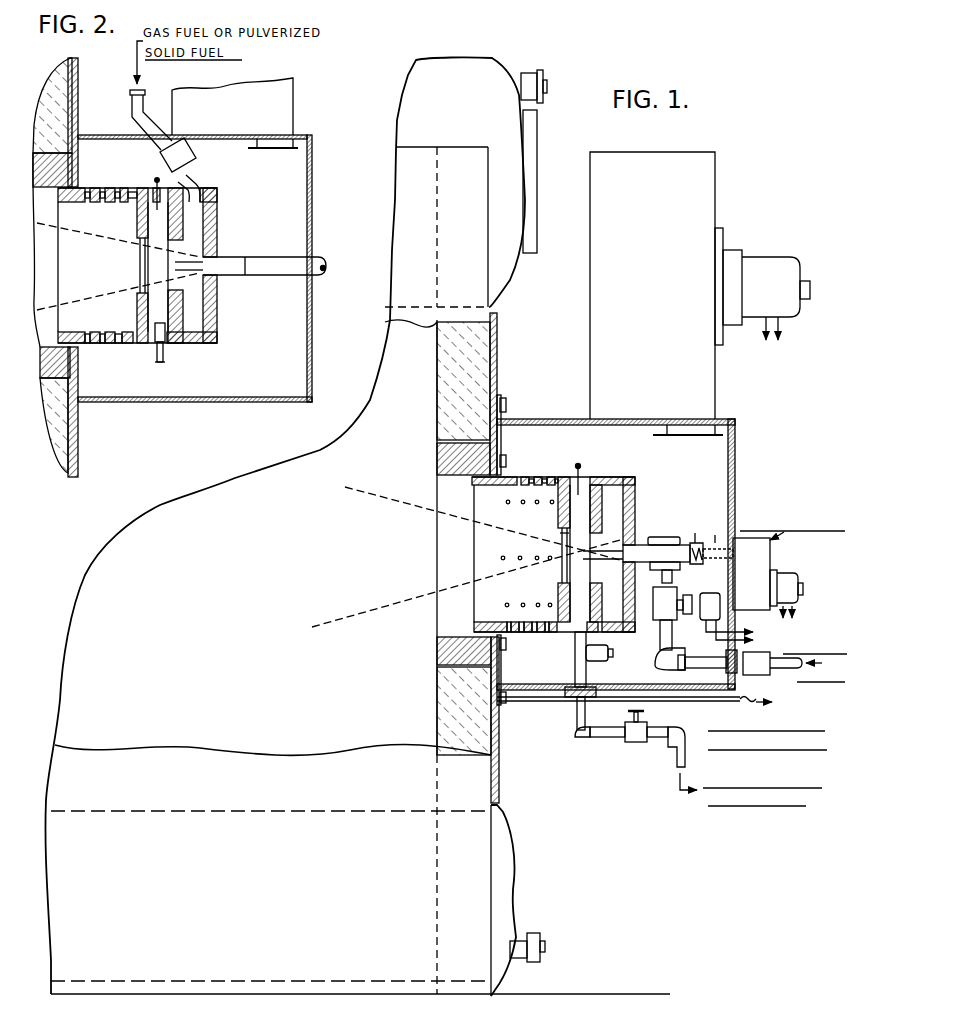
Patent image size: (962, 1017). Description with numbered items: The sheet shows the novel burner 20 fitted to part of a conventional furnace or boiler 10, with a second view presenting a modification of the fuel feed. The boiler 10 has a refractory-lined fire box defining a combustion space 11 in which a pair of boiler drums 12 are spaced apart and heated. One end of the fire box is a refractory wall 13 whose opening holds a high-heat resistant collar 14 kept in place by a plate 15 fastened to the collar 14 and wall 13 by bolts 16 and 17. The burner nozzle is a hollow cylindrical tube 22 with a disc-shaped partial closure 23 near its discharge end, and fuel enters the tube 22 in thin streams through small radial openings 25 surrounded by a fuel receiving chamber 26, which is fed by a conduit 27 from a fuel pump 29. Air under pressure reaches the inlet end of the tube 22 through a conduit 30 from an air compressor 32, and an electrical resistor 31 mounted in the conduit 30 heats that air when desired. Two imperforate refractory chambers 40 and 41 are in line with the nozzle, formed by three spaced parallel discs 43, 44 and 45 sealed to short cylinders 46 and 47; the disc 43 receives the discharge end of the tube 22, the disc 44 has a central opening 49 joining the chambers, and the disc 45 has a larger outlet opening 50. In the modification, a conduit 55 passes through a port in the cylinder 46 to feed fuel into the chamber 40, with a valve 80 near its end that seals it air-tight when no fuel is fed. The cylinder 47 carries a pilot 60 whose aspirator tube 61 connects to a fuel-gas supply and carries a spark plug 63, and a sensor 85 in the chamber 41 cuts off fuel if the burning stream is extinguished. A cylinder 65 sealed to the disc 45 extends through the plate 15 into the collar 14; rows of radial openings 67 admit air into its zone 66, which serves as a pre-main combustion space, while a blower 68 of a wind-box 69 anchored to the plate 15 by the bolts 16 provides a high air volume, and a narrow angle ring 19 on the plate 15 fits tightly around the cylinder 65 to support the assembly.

In FIG. 1, the furnace or boiler 10 is at (529, 64).
In FIG. 1, the combustion space or chamber 11 is at (311, 708).
In FIG. 1, the boiler drums 12 is at (468, 67).
In FIG. 1, the refractory wall 13 is at (443, 360).
In FIG. 2, the refractory wall 13 is at (62, 453).
In FIG. 1, the high-heat resistant collar 14 is at (441, 458).
In FIG. 2, the high-heat resistant collar 14 is at (40, 368).
In FIG. 1, the plate 15 is at (497, 350).
In FIG. 2, the plate 15 is at (78, 439).
In FIG. 1, the bolts 16 is at (506, 403).
In FIG. 1, the bolts 17 is at (506, 457).
In FIG. 1, the narrow angle ring 19 is at (504, 422).
In FIG. 1, the burner 20 is at (646, 507).
In FIG. 2, the burner 20 is at (223, 187).
In FIG. 1, the hollow cylindrical tube 22 is at (640, 545).
In FIG. 2, the hollow cylindrical tube 22 is at (318, 256).
In FIG. 1, the partial closure 23 is at (592, 550).
In FIG. 2, the partial closure 23 is at (214, 258).
In FIG. 1, the radial openings 25 is at (663, 538).
In FIG. 1, the fuel receiving chamber 26 is at (699, 546).
In FIG. 1, the conduit 27 is at (675, 575).
In FIG. 1, the fuel pump 29 is at (673, 622).
In FIG. 1, the conduit 30 is at (720, 556).
In FIG. 1, the electrical resistor 31 is at (710, 529).
In FIG. 1, the air compressor 32 is at (779, 561).
In FIG. 1, the chamber 40 is at (599, 480).
In FIG. 2, the chamber 40 is at (186, 347).
In FIG. 1, the chamber 41 is at (638, 506).
In FIG. 2, the chamber 41 is at (210, 243).
In FIG. 1, the refractory disc 43 is at (631, 478).
In FIG. 2, the refractory disc 43 is at (218, 193).
In FIG. 1, the refractory disc 44 is at (638, 483).
In FIG. 2, the refractory disc 44 is at (185, 221).
In FIG. 1, the refractory disc 45 is at (556, 508).
In FIG. 2, the refractory disc 45 is at (136, 221).
In FIG. 1, the refractory short cylinder 46 is at (612, 479).
In FIG. 2, the refractory short cylinder 46 is at (198, 344).
In FIG. 1, the refractory short cylinder 47 is at (581, 477).
In FIG. 2, the refractory short cylinder 47 is at (170, 344).
In FIG. 1, the circular opening 49 is at (562, 576).
In FIG. 2, the circular opening 49 is at (183, 291).
In FIG. 1, the circular outlet opening 50 is at (560, 530).
In FIG. 2, the circular outlet opening 50 is at (137, 292).
In FIG. 2, the conduit 55 is at (133, 116).
In FIG. 1, the pilot 60 is at (575, 644).
In FIG. 2, the pilot 60 is at (200, 325).
In FIG. 1, the aspirator tube 61 is at (573, 674).
In FIG. 1, the spark plug 63 is at (606, 648).
In FIG. 1, the cylinder 65 is at (474, 627).
In FIG. 2, the cylinder 65 is at (68, 332).
In FIG. 1, the zone 66 is at (481, 609).
In FIG. 1, the radial openings 67 is at (522, 620).
In FIG. 2, the radial openings 67 is at (125, 344).
In FIG. 1, the blower 68 is at (705, 201).
In FIG. 2, the blower 68 is at (285, 103).
In FIG. 1, the wind-box 69 is at (729, 420).
In FIG. 2, the wind-box 69 is at (313, 168).
In FIG. 2, the valve 80 is at (197, 154).
In FIG. 1, the sensor 85 is at (577, 464).
In FIG. 2, the sensor 85 is at (157, 194).